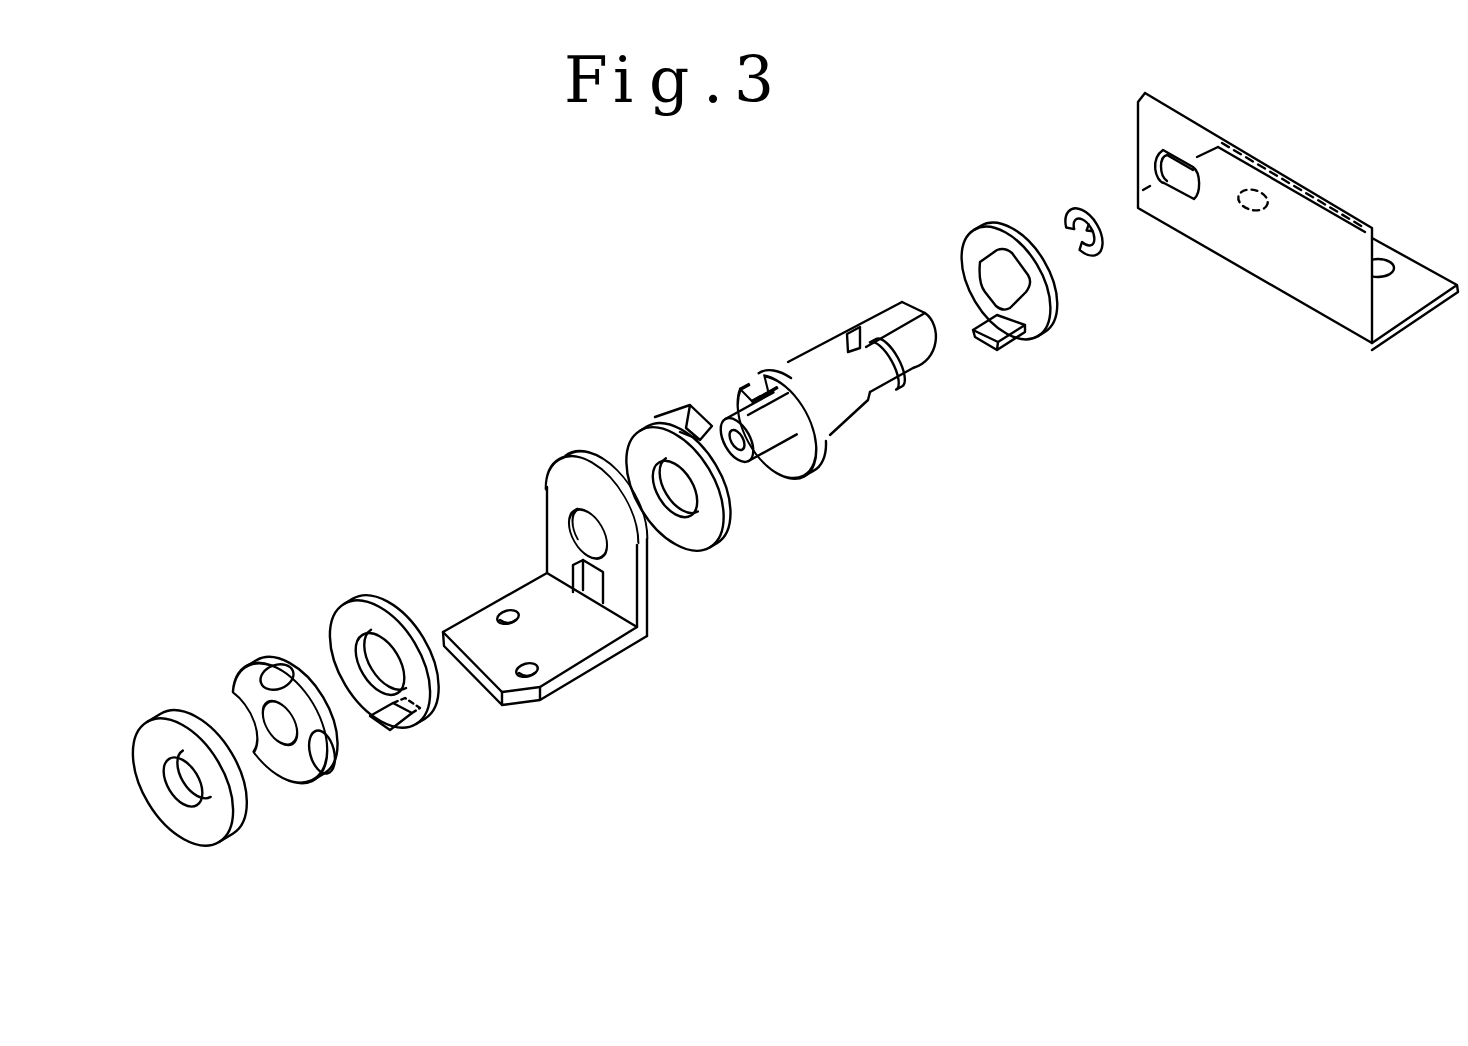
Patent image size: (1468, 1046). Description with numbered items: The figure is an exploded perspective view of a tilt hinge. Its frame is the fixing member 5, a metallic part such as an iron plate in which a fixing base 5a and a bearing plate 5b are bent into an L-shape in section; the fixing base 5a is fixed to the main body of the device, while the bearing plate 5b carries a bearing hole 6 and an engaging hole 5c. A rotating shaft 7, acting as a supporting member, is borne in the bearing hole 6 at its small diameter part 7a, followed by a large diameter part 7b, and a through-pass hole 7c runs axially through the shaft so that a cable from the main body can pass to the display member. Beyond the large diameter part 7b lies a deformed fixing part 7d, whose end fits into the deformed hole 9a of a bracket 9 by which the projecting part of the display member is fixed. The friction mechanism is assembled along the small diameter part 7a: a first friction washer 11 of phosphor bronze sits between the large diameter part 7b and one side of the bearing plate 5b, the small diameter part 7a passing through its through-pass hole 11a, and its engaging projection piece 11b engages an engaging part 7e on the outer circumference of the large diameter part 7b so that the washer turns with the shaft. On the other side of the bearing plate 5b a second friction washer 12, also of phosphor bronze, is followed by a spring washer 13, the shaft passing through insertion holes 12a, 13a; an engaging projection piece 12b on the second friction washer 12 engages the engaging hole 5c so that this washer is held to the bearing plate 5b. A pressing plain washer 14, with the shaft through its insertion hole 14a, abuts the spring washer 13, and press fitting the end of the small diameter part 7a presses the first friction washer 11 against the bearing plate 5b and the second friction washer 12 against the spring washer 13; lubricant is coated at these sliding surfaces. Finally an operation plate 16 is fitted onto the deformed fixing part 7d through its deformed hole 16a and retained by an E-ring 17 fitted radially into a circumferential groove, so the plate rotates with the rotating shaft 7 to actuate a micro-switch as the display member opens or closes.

The fixing member 5 is at (553, 598).
The fixing base 5a is at (565, 655).
The bearing plate 5b is at (546, 530).
The engaging hole 5c is at (565, 577).
The bearing hole 6 is at (568, 537).
The rotating shaft 7 is at (827, 388).
The small diameter part 7a is at (730, 413).
The large diameter part 7b is at (803, 448).
The through-pass hole 7c is at (748, 447).
The deformed fixing part 7d is at (880, 320).
The engaging part 7e is at (766, 372).
The bracket 9 is at (1265, 221).
The deformed hole 9a is at (1157, 180).
The first friction washer 11 is at (654, 476).
The through-pass hole 11a is at (652, 463).
The engaging projection piece 11b is at (682, 415).
The second friction washer 12 is at (358, 674).
The insertion hole 12a is at (363, 657).
The engaging projection piece 12b is at (392, 730).
The spring washer 13 is at (266, 748).
The insertion hole 13a is at (293, 752).
The pressing plain washer 14 is at (195, 806).
The insertion hole 14a is at (188, 797).
The operation plate 16 is at (1009, 303).
The deformed hole 16a is at (993, 350).
The E-ring 17 is at (1103, 257).